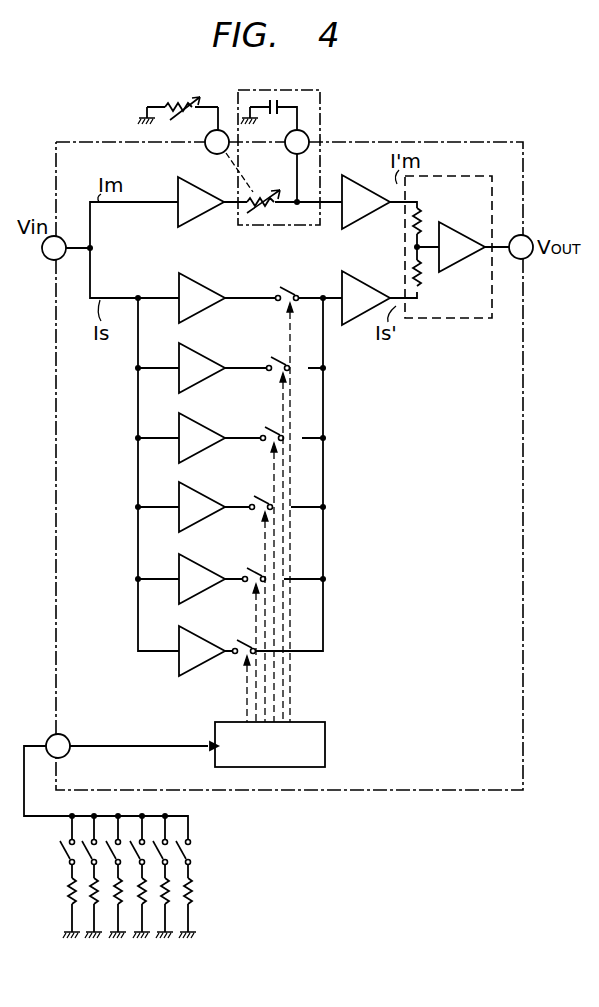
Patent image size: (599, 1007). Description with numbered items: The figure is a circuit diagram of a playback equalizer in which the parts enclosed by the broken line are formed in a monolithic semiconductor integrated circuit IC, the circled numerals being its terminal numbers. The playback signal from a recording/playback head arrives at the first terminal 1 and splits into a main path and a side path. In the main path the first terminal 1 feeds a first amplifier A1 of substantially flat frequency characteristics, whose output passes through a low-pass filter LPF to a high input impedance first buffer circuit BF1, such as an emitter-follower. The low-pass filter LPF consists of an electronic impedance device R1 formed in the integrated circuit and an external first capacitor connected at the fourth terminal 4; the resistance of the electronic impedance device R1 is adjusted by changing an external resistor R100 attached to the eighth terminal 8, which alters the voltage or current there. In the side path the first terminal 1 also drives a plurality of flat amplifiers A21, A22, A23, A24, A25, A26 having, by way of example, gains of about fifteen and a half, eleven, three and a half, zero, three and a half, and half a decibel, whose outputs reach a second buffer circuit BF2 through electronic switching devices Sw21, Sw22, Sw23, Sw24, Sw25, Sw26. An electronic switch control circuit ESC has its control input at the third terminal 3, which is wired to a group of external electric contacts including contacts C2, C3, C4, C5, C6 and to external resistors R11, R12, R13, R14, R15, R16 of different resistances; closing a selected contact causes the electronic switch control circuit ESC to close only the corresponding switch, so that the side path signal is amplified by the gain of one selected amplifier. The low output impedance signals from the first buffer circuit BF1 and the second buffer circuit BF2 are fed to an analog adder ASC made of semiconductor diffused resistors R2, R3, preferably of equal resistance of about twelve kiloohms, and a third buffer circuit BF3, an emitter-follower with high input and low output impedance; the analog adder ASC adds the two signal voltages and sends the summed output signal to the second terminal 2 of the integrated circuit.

The first terminal 1 is at (54, 248).
The second terminal 2 is at (521, 247).
The third terminal 3 is at (58, 746).
The fourth terminal 4 is at (297, 142).
The eighth terminal 8 is at (217, 142).
The integrated circuit IC is at (450, 792).
The low-pass filter LPF is at (376, 120).
The analog adder ASC is at (476, 356).
The electronic switch control circuit ESC is at (270, 744).
The external resistor R100 is at (169, 103).
The electronic impedance device R1 is at (253, 183).
The semiconductor diffused resistor R2 is at (420, 220).
The semiconductor diffused resistor R3 is at (420, 272).
The first amplifier A1 is at (201, 202).
The amplifier A21 is at (202, 298).
The amplifier A22 is at (195, 355).
The amplifier A23 is at (195, 425).
The amplifier A24 is at (197, 498).
The amplifier A25 is at (199, 573).
The amplifier A26 is at (199, 644).
The electronic switching device Sw21 is at (283, 490).
The electronic switching device Sw22 is at (265, 525).
The electronic switching device Sw23 is at (255, 560).
The electronic switching device Sw24 is at (253, 501).
The electronic switching device Sw25 is at (248, 567).
The electronic switching device Sw26 is at (241, 635).
The first buffer circuit BF1 is at (360, 182).
The second buffer circuit BF2 is at (347, 275).
The third buffer circuit BF3 is at (468, 239).
The electric contact C2 is at (87, 852).
The electric contact C3 is at (112, 852).
The electric contact C4 is at (138, 852).
The electric contact C5 is at (160, 852).
The electric contact C6 is at (195, 857).
The external resistor R11 is at (57, 892).
The external resistor R12 is at (92, 904).
The external resistor R13 is at (117, 904).
The external resistor R14 is at (142, 904).
The external resistor R15 is at (164, 904).
The external resistor R16 is at (205, 892).